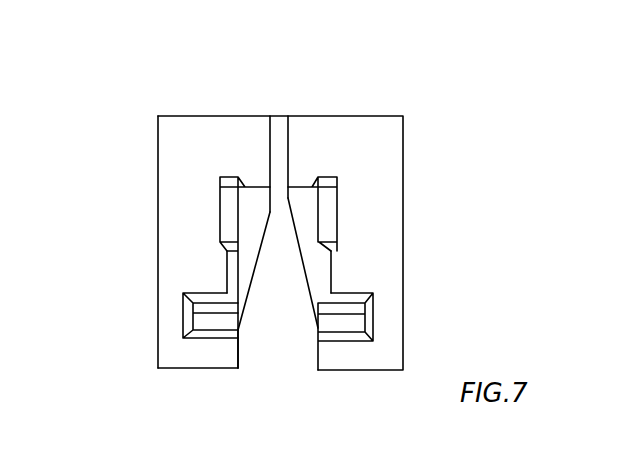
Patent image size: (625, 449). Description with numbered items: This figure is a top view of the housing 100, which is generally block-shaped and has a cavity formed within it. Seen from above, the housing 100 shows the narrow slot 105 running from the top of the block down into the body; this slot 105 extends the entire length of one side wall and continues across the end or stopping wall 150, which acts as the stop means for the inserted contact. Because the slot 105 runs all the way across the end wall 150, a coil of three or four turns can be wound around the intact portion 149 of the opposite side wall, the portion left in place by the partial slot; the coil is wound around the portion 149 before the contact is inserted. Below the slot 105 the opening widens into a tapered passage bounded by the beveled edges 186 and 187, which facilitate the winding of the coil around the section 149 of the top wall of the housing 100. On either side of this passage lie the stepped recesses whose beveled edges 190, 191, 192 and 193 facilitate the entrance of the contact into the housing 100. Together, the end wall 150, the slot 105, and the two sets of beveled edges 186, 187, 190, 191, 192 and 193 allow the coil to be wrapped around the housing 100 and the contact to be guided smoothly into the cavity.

The housing 100 is at (188, 108).
The intact portion of side wall 149 is at (280, 127).
The slot 105 is at (282, 197).
The end wall 150 is at (250, 217).
The beveled edge 190 is at (233, 268).
The beveled edge 191 is at (327, 278).
The beveled edge 192 is at (208, 308).
The beveled edge 193 is at (355, 313).
The beveled edge 186 is at (245, 323).
The beveled edge 187 is at (315, 325).